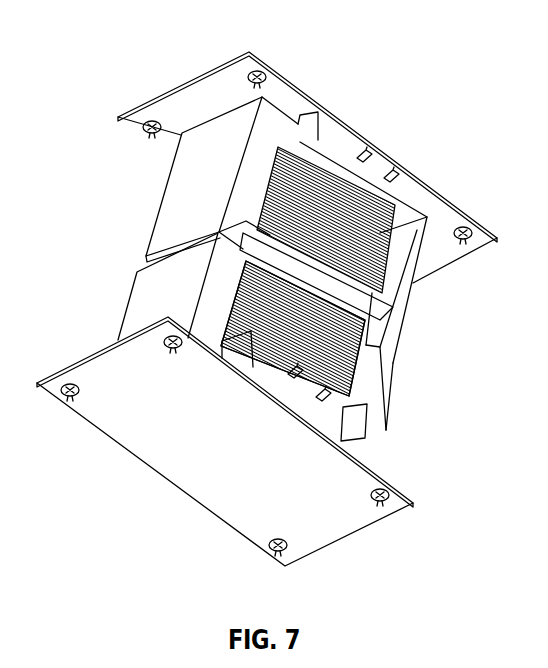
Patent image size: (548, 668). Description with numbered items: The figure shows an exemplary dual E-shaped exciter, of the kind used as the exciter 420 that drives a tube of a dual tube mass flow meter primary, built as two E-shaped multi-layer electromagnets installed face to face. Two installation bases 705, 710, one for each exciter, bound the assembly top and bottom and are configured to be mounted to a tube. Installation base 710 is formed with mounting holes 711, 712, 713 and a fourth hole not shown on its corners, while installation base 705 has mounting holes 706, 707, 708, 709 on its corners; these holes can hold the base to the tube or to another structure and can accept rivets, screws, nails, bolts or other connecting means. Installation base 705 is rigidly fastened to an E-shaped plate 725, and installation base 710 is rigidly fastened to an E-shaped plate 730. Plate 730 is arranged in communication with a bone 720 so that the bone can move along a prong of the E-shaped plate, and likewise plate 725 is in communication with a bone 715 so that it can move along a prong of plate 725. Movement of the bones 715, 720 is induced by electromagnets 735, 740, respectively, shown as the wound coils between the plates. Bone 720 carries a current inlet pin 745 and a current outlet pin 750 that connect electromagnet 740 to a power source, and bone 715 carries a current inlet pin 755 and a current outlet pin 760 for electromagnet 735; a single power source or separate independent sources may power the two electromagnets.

The exciter 420 is at (195, 66).
The installation base 705 is at (185, 470).
The mounting hole 706 is at (173, 348).
The mounting hole 707 is at (70, 397).
The mounting hole 708 is at (280, 553).
The mounting hole 709 is at (382, 502).
The installation base 710 is at (172, 104).
The mounting hole 711 is at (259, 73).
The mounting hole 712 is at (150, 134).
The mounting hole 713 is at (463, 241).
The bone 715 is at (400, 330).
The bone 720 is at (261, 220).
The E-shaped plate 725 is at (143, 313).
The E-shaped plate 730 is at (167, 237).
The electromagnet 735 is at (375, 365).
The electromagnet 740 is at (397, 292).
The current inlet pin 745 is at (372, 149).
The current outlet pin 750 is at (400, 173).
The current inlet pin 755 is at (320, 408).
The current outlet pin 760 is at (295, 380).